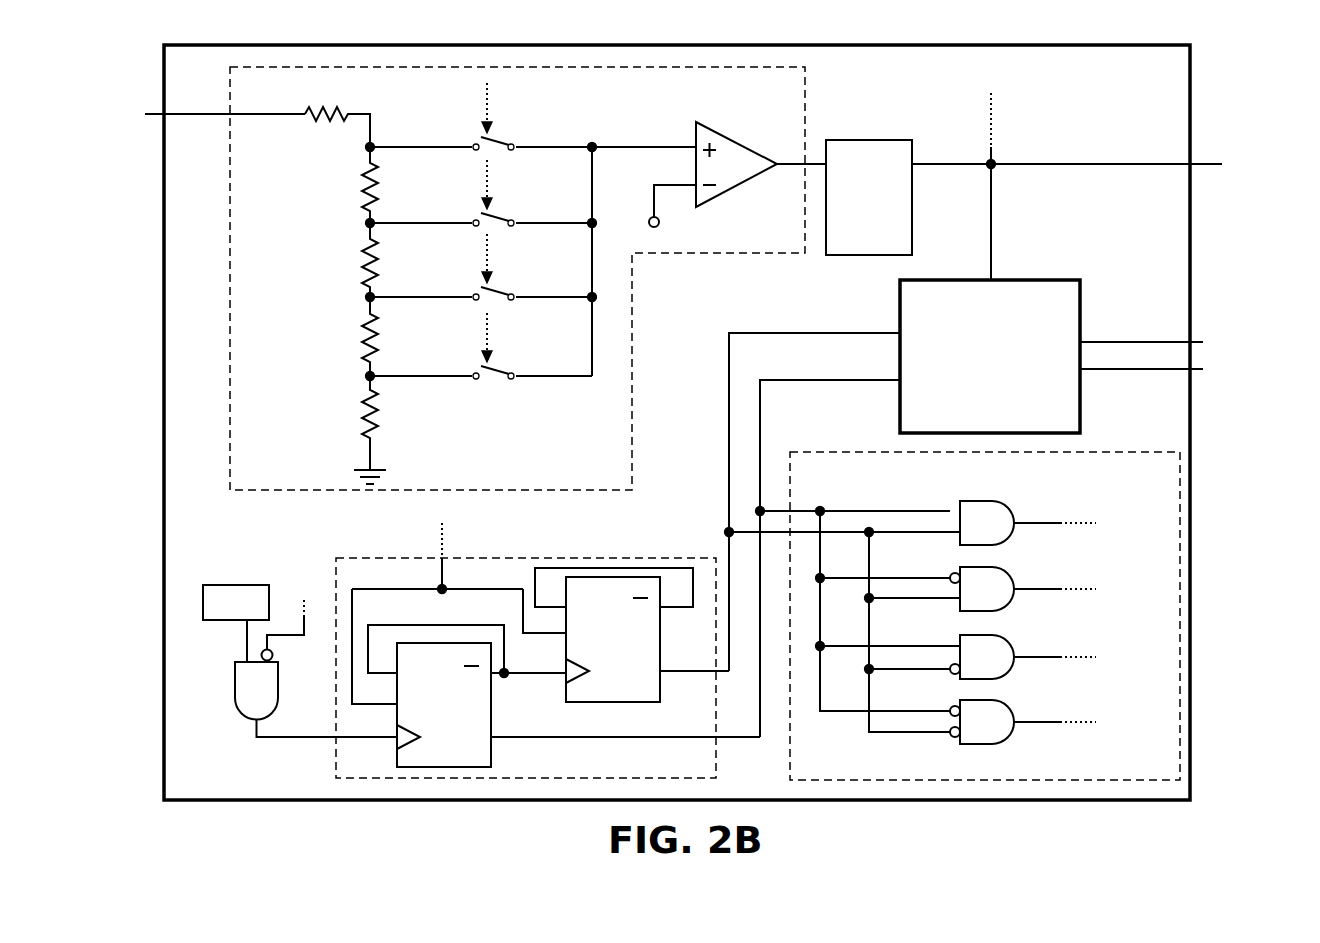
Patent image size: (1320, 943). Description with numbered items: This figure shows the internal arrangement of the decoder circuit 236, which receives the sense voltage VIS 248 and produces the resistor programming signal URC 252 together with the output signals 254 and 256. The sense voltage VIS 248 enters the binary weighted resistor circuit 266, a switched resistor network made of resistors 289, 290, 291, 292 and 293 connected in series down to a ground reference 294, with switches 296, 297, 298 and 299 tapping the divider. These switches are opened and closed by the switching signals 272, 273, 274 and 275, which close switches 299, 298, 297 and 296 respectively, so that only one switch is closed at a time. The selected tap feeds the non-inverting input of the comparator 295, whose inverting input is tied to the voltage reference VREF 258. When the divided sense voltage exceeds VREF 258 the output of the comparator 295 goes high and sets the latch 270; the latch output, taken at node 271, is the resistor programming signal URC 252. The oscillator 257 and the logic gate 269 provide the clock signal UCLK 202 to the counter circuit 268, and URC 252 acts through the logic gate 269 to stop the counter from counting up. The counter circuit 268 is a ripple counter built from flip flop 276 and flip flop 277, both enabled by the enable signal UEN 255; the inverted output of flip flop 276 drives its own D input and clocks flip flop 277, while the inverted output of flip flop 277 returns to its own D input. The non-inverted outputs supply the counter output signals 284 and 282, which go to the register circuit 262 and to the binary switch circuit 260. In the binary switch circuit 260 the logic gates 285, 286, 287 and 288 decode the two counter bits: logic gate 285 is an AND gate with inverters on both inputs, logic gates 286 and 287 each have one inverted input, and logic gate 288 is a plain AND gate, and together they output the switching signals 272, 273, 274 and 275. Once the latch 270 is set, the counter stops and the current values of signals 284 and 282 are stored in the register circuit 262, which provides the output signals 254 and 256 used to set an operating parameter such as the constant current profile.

The clock signal 202 is at (273, 752).
The decoder circuit 236 is at (1192, 78).
The sense voltage 248 is at (119, 146).
The resistor programming signal 252 is at (1262, 168).
The output signal S1 254 is at (1240, 347).
The enable signal 255 is at (521, 537).
The output signal S2 256 is at (1240, 374).
The oscillator 257 is at (231, 578).
The voltage reference 258 is at (706, 227).
The binary switch circuit 260 is at (823, 452).
The register circuit 262 is at (1081, 292).
The binary weighted resistor circuit 266 is at (634, 318).
The counter circuit 268 is at (718, 775).
The logic gate 269 is at (238, 712).
The latch 270 is at (912, 246).
The output node 271 is at (995, 169).
The switching signal UA0 272 is at (1124, 713).
The switching signal UA1 273 is at (1124, 648).
The switching signal UA2 274 is at (1124, 580).
The switching signal UA3 275 is at (1124, 514).
The flip flop 276 is at (492, 748).
The flip flop 277 is at (664, 704).
The signal Q1 282 is at (816, 323).
The signal Q0 284 is at (816, 368).
The logic gate 285 is at (1014, 740).
The logic gate 286 is at (1016, 667).
The logic gate 287 is at (1016, 599).
The logic gate 288 is at (1016, 533).
The resistor 289 is at (304, 105).
The resistor 290 is at (355, 194).
The resistor 291 is at (359, 269).
The resistor 292 is at (358, 346).
The resistor 293 is at (363, 417).
The ground reference 294 is at (388, 476).
The comparator 295 is at (736, 133).
The switch 296 is at (513, 143).
The switch 297 is at (513, 219).
The switch 298 is at (513, 293).
The switch 299 is at (497, 381).